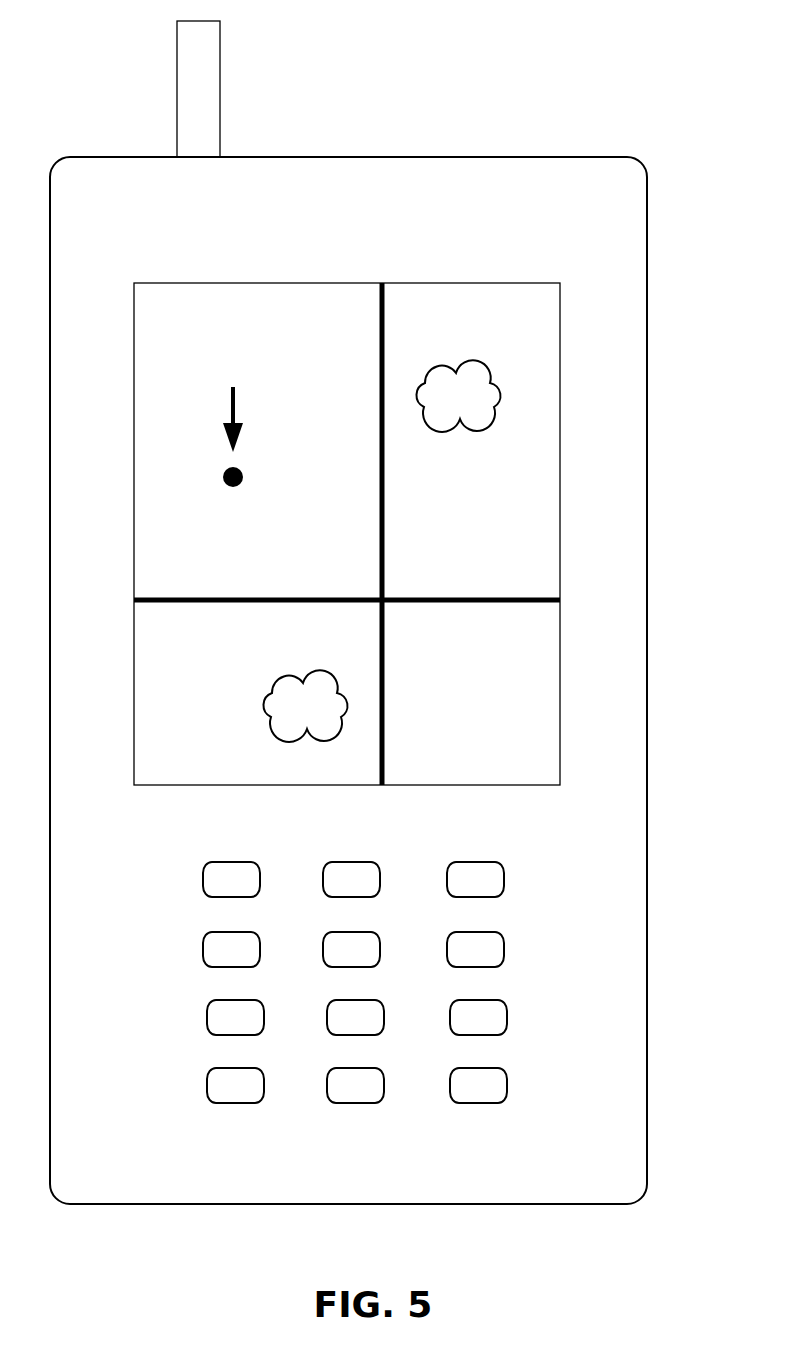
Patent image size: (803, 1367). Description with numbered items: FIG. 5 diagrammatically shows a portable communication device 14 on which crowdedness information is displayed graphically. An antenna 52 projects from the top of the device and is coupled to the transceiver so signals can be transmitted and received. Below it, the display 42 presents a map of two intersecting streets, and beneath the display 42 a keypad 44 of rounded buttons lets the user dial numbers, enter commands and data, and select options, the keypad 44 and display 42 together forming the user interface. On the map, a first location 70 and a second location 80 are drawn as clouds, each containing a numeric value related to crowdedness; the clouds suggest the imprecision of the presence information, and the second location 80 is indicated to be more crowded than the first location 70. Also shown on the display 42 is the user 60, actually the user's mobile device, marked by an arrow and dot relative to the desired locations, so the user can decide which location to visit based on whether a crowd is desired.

The portable communication device 14 is at (443, 157).
The antenna 52 is at (221, 87).
The display 42 is at (560, 350).
The user 60 is at (183, 451).
The second location 80 is at (544, 398).
The first location 70 is at (233, 741).
The keypad 44 is at (565, 983).